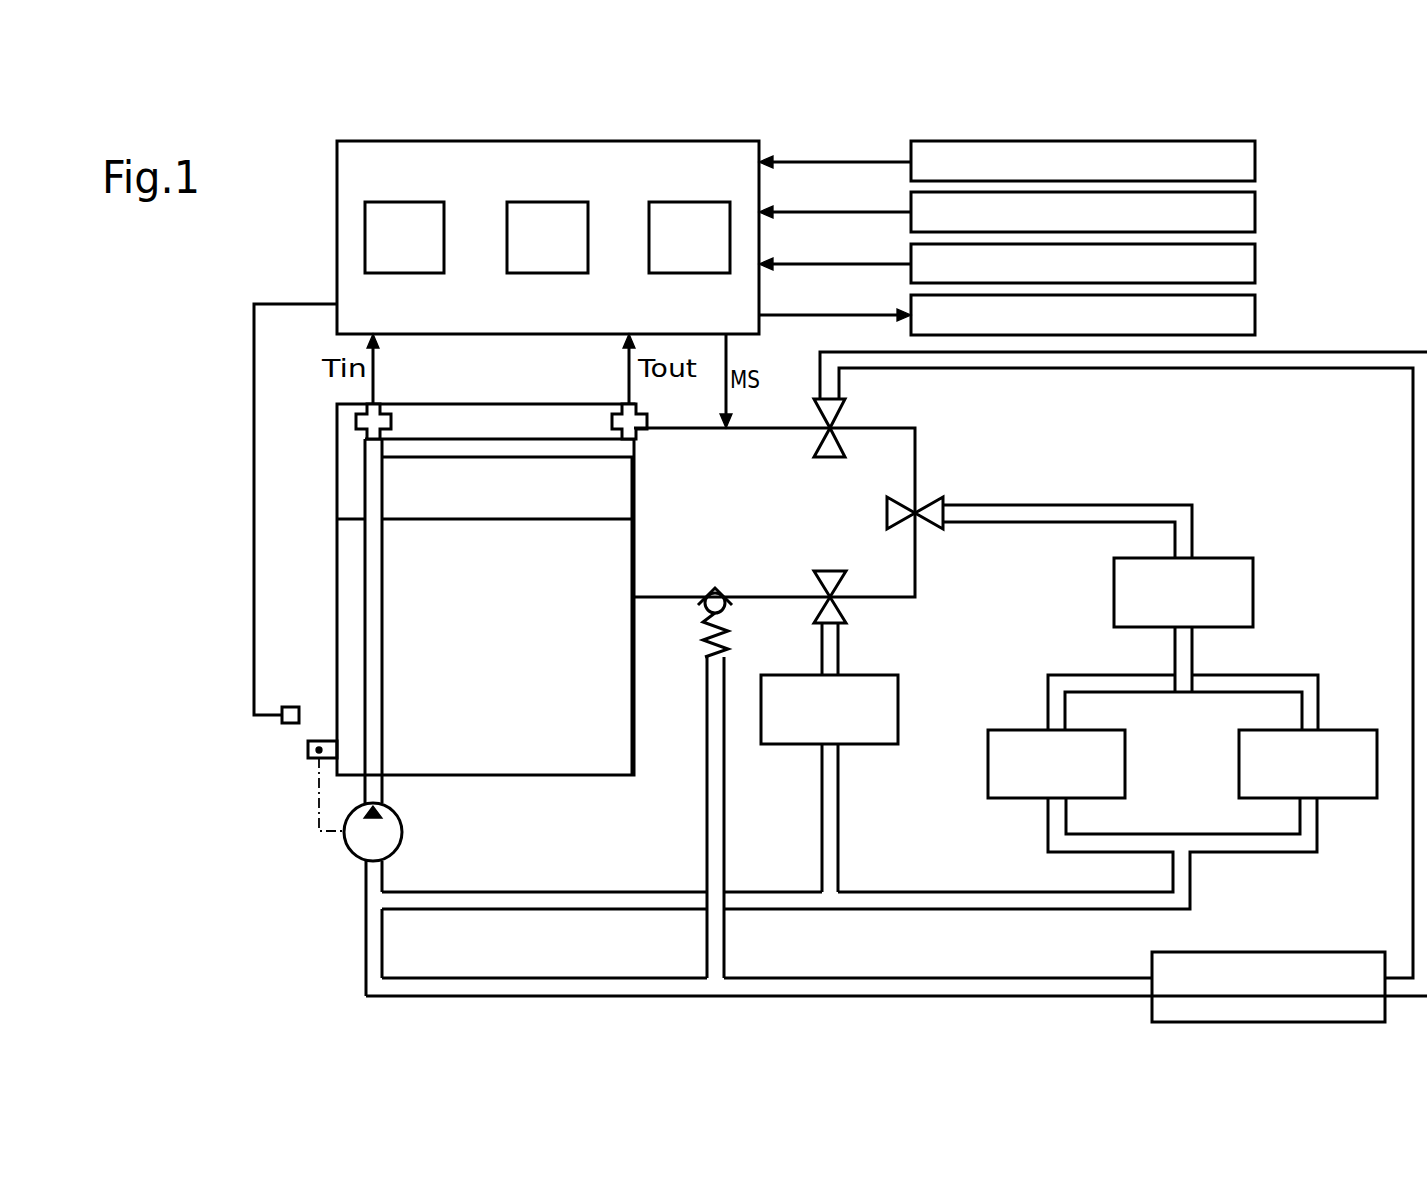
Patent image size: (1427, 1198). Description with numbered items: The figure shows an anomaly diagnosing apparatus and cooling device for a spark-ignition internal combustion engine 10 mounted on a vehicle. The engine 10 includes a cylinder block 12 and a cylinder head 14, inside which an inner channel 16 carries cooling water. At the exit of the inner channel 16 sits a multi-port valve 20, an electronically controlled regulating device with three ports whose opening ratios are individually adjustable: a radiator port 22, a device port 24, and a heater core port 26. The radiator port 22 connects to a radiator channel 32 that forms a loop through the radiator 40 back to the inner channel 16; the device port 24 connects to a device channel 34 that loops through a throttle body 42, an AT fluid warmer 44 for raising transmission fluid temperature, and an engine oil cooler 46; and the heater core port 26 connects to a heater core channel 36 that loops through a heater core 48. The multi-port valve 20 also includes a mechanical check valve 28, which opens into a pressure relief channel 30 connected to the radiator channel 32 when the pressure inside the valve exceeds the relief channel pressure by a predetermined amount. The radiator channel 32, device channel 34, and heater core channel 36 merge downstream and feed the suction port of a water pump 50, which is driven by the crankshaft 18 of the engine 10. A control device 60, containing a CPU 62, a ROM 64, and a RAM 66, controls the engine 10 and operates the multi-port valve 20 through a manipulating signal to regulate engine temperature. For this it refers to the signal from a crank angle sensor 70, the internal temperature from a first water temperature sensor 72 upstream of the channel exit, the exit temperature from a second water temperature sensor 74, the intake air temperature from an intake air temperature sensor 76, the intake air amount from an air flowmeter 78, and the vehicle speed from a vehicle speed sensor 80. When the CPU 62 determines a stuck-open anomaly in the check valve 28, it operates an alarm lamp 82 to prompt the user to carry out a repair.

The internal combustion engine 10 is at (307, 393).
The cylinder block 12 is at (337, 645).
The cylinder head 14 is at (337, 460).
The inner channel 16 is at (382, 647).
The crankshaft 18 is at (309, 748).
The multi-port valve 20 is at (937, 465).
The radiator port 22 is at (843, 409).
The device port 24 is at (935, 532).
The heater core port 26 is at (845, 612).
The check valve 28 is at (728, 633).
The pressure relief channel 30 is at (724, 828).
The radiator channel 32 is at (1320, 346).
The device channel 34 is at (1158, 505).
The heater core channel 36 is at (838, 818).
The radiator 40 is at (1345, 952).
The throttle body 42 is at (1213, 558).
The AT fluid warmer 44 is at (1340, 730).
The engine oil cooler 46 is at (1088, 730).
The heater core 48 is at (860, 675).
The water pump 50 is at (402, 832).
The control device 60 is at (337, 166).
The CPU 62 is at (411, 202).
The ROM 64 is at (555, 202).
The RAM 66 is at (698, 202).
The crank angle sensor 70 is at (290, 707).
The first water temperature sensor 72 is at (386, 408).
The second water temperature sensor 74 is at (615, 408).
The intake air temperature sensor 76 is at (1257, 160).
The air flowmeter 78 is at (1257, 212).
The vehicle speed sensor 80 is at (1257, 262).
The alarm lamp 82 is at (1257, 313).